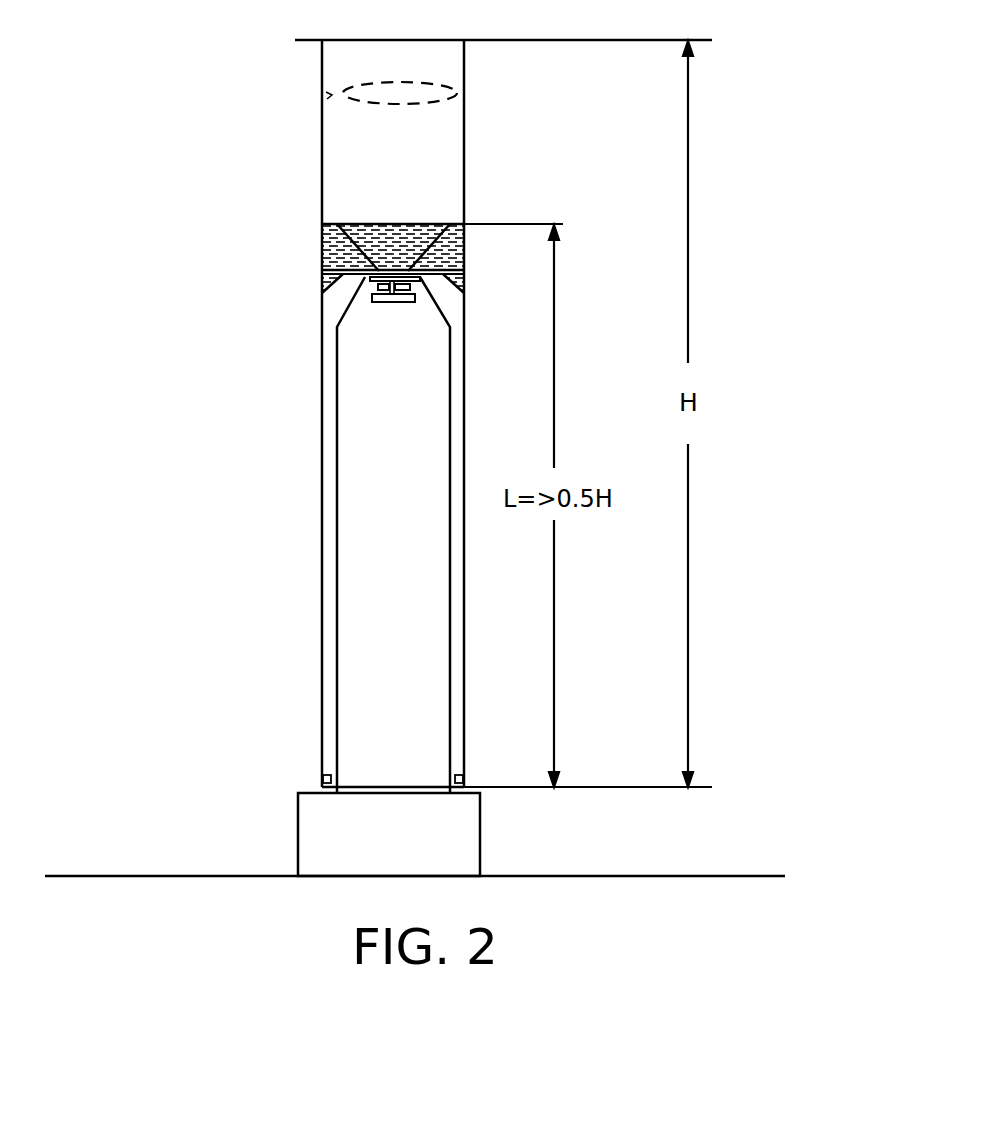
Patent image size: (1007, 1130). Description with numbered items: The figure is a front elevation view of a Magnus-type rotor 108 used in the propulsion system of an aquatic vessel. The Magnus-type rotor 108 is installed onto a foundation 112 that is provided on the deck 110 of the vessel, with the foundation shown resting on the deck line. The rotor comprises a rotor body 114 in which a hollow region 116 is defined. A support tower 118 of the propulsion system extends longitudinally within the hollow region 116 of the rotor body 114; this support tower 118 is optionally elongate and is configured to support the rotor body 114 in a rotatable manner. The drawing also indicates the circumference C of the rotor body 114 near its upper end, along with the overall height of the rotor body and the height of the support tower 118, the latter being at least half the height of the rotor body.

The Magnus-type rotor 108 is at (571, 172).
The deck 110 is at (227, 876).
The foundation 112 is at (481, 857).
The rotor body 114 is at (464, 120).
The hollow region 116 is at (335, 168).
The support tower 118 is at (445, 386).
The circumference C is at (344, 93).